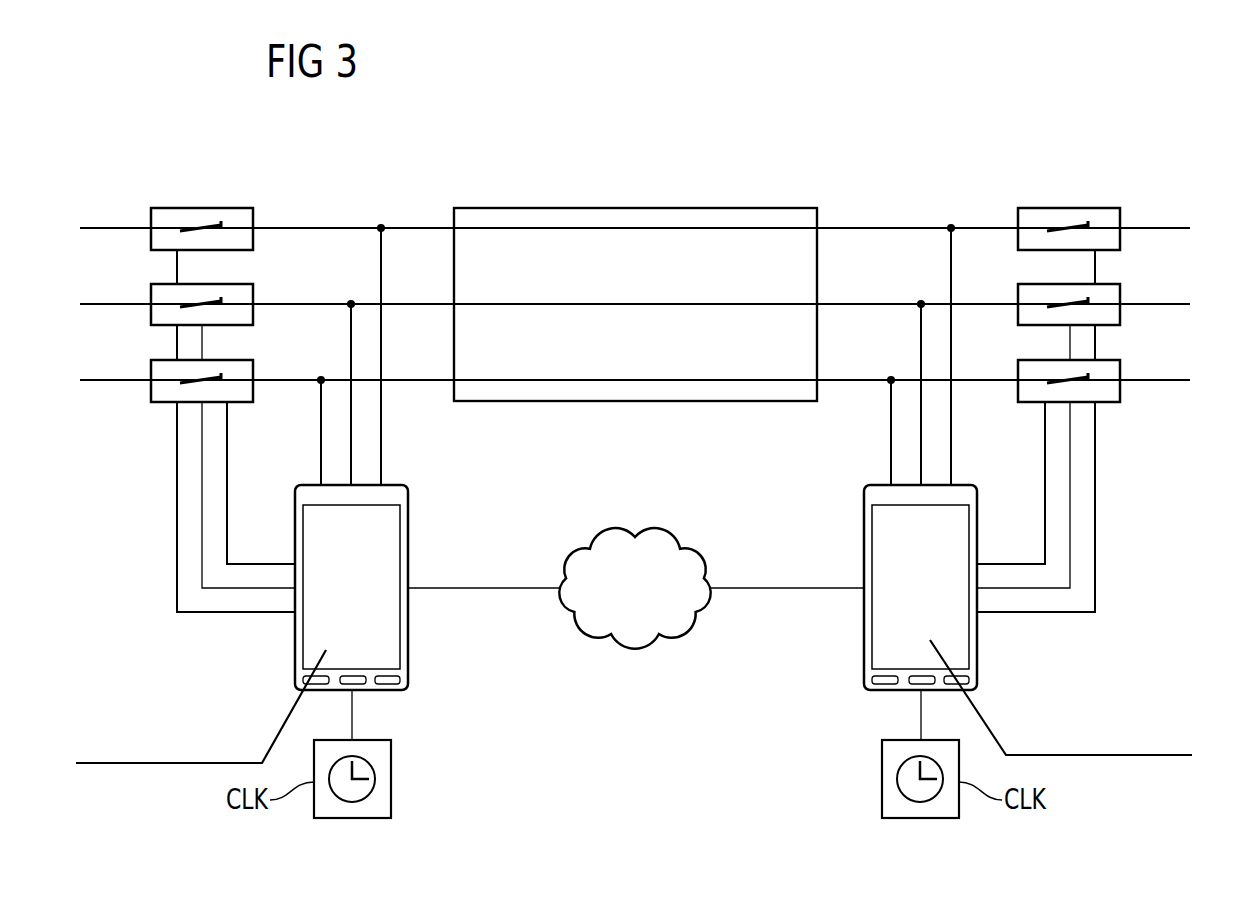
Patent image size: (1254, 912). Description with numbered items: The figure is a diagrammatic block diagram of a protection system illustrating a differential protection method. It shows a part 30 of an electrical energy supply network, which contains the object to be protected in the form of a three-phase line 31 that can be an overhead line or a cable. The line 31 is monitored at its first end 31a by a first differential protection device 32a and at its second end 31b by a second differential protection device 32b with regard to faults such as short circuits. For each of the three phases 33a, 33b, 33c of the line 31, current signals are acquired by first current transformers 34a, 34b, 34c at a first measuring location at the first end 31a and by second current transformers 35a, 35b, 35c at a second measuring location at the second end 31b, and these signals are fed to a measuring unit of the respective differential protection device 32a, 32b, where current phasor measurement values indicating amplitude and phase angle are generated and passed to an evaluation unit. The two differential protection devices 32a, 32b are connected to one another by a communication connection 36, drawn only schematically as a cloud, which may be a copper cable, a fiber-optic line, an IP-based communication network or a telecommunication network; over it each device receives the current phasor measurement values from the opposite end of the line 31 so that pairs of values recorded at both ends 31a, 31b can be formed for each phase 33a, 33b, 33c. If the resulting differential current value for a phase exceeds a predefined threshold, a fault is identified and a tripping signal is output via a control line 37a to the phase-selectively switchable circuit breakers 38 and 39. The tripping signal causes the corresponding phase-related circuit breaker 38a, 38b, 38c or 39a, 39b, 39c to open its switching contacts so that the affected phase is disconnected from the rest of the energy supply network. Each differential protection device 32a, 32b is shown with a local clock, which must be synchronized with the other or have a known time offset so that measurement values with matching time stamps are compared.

The part of an electrical energy supply network 30 is at (533, 190).
The three-phase line 31 is at (727, 207).
The first end of the line 31a is at (343, 190).
The second end of the line 31b is at (911, 190).
The first differential protection device 32a is at (295, 654).
The second differential protection device 32b is at (977, 654).
The phase of the line 33a is at (585, 229).
The phase of the line 33b is at (633, 305).
The phase of the line 33c is at (680, 381).
The first current transformer 34a is at (381, 228).
The first current transformer 34b is at (351, 304).
The first current transformer 34c is at (321, 380).
The second current transformer 35a is at (951, 228).
The second current transformer 35b is at (921, 304).
The second current transformer 35c is at (891, 380).
The communication connection 36 is at (635, 655).
The control line 37a is at (158, 531).
The circuit breaker 38 is at (163, 257).
The phase-related circuit breaker 38a is at (151, 215).
The phase-related circuit breaker 38b is at (151, 291).
The phase-related circuit breaker 38c is at (151, 367).
The circuit breaker 39 is at (1109, 257).
The phase-related circuit breaker 39a is at (1120, 218).
The phase-related circuit breaker 39b is at (1120, 294).
The phase-related circuit breaker 39c is at (1120, 370).